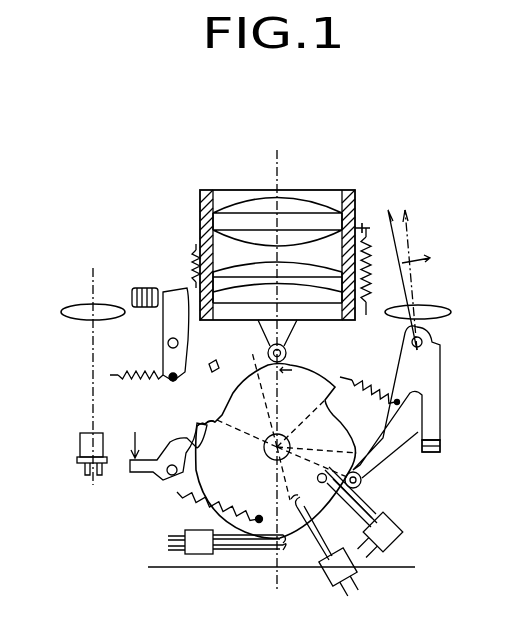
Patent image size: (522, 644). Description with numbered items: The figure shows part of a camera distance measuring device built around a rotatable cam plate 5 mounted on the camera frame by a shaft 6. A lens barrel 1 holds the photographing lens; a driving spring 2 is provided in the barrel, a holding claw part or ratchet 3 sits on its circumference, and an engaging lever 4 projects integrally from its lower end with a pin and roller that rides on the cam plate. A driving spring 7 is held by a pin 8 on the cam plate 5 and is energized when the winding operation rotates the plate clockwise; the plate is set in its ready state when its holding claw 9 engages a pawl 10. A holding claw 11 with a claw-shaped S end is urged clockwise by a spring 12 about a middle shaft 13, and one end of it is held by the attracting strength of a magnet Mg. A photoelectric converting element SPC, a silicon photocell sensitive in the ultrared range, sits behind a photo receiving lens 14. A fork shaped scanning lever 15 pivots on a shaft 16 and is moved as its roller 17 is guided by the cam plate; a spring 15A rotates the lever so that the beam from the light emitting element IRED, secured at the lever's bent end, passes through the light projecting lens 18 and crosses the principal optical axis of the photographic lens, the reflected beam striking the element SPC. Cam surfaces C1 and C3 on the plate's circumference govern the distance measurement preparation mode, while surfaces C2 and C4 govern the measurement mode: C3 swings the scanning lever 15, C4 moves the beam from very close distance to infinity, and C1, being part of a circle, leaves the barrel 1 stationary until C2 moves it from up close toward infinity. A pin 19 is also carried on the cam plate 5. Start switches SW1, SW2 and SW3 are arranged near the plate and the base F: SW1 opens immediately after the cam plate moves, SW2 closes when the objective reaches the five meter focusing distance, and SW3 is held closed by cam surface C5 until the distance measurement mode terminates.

The lens barrel 1 is at (348, 193).
The driving spring 2 is at (370, 240).
The holding claw part or ratchet 3 is at (194, 252).
The engaging lever 4 is at (288, 352).
The cam plate 5 is at (321, 494).
The shaft 6 is at (284, 432).
The driving spring 7 is at (188, 495).
The pin 8 is at (257, 514).
The holding claw 9 is at (196, 456).
The pawl 10 is at (147, 471).
The holding claw 11 is at (165, 330).
The spring 12 is at (152, 380).
The middle shaft 13 is at (167, 345).
The photo receiving lens 14 is at (76, 302).
The scanning lever 15 is at (430, 382).
The spring 15A is at (362, 378).
The shaft 16 is at (423, 342).
The roller 17 is at (362, 484).
The light projecting lens 18 is at (435, 305).
The pin 19 is at (317, 478).
The magnet Mg is at (152, 288).
The photoelectric converting element SPC is at (78, 447).
The photoelectric light emitting element IRED is at (440, 448).
The start switch SW1 is at (397, 532).
The start switch SW2 is at (328, 582).
The start switch SW3 is at (198, 554).
The base plate F is at (240, 568).
The cam surface C1 is at (237, 352).
The cam surface C2 is at (255, 420).
The cam surface C3 is at (365, 430).
The cam surface C4 is at (316, 440).
The cam surface C5 is at (264, 490).